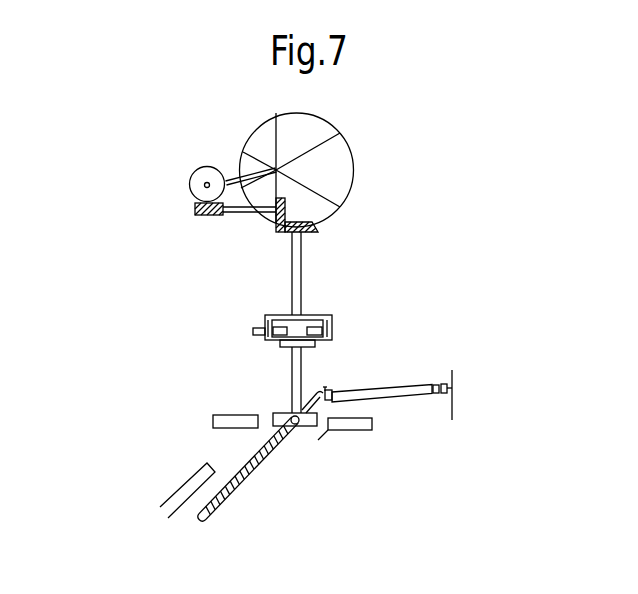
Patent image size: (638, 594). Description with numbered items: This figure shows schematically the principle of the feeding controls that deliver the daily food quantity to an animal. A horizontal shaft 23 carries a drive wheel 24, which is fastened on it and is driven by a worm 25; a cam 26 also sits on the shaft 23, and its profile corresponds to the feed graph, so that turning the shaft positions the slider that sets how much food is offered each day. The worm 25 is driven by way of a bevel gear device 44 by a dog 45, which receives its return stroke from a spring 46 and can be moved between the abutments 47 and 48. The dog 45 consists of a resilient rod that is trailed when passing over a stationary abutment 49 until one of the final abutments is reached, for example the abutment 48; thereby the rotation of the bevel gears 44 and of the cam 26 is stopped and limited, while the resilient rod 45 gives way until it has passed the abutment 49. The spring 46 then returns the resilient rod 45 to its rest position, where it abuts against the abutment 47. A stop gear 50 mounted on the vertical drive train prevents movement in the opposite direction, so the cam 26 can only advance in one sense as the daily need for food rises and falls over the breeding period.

The horizontal shaft 23 is at (235, 165).
The drive wheel 24 is at (200, 182).
The worm 25 is at (207, 216).
The cam 26 is at (338, 160).
The bevel gear device 44 is at (315, 228).
The dog 45 is at (260, 465).
The spring 46 is at (387, 395).
The abutment 47 is at (238, 425).
The abutment 48 is at (360, 430).
The stationary abutment 49 is at (192, 477).
The stop gear 50 is at (333, 315).